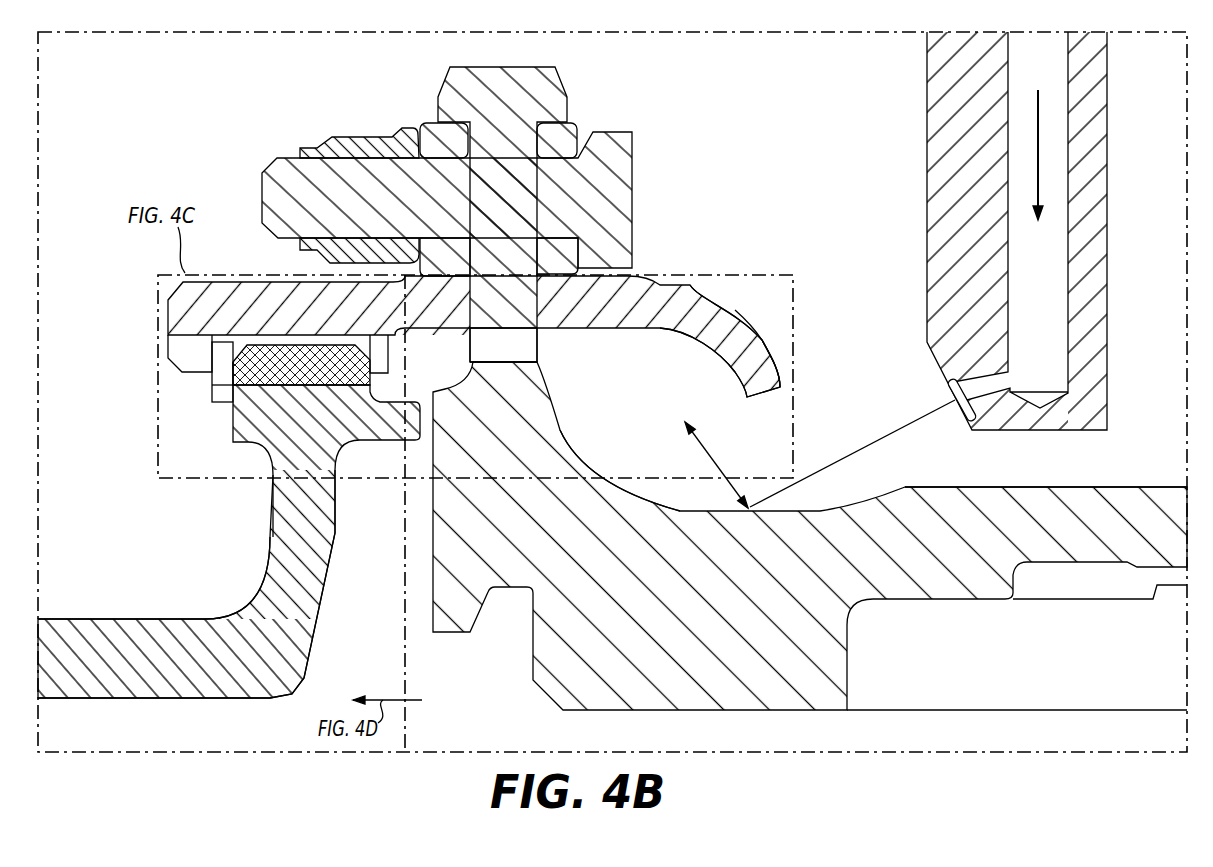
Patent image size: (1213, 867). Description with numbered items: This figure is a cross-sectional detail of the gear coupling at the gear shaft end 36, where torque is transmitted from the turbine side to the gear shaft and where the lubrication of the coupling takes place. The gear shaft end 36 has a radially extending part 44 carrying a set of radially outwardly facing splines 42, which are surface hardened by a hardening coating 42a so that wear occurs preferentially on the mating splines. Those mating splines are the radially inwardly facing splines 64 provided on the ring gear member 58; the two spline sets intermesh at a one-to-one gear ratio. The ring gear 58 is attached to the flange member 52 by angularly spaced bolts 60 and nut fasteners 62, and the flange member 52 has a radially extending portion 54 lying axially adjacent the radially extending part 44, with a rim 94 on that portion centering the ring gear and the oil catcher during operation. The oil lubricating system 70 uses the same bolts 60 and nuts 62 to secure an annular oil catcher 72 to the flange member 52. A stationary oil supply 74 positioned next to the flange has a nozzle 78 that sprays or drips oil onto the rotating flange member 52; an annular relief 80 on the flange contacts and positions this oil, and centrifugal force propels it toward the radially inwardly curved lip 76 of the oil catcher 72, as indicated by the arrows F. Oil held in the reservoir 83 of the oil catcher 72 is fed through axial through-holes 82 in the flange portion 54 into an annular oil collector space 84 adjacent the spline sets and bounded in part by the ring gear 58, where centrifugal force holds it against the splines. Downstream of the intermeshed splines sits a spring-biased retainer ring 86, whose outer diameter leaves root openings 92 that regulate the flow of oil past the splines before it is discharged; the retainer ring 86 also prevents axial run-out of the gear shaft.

The gear shaft axial end 36 is at (160, 113).
The outwardly facing splines 42 is at (278, 387).
The hardening coating 42a is at (233, 362).
The radially extending part 44 is at (283, 510).
The flange member 52 is at (547, 648).
The radially extending portion 54 is at (520, 252).
The ring gear member 58 is at (218, 303).
The bolts 60 is at (613, 168).
The nut fasteners 62 is at (322, 137).
The inwardly facing splines 64 is at (377, 358).
The oil lubricating system 70 is at (745, 152).
The oil catcher 72 is at (687, 287).
The stationary oil supply 74 is at (927, 172).
The radially inwardly curved lip 76 is at (760, 333).
The nozzle 78 is at (952, 382).
The annular relief 80 is at (830, 507).
The axial through-holes 82 is at (513, 353).
The reservoir 83 is at (681, 372).
The oil collector space 84 is at (448, 355).
The retainer ring 86 is at (220, 385).
The root openings 92 is at (213, 357).
The rim 94 is at (462, 82).
The arrows F is at (715, 457).